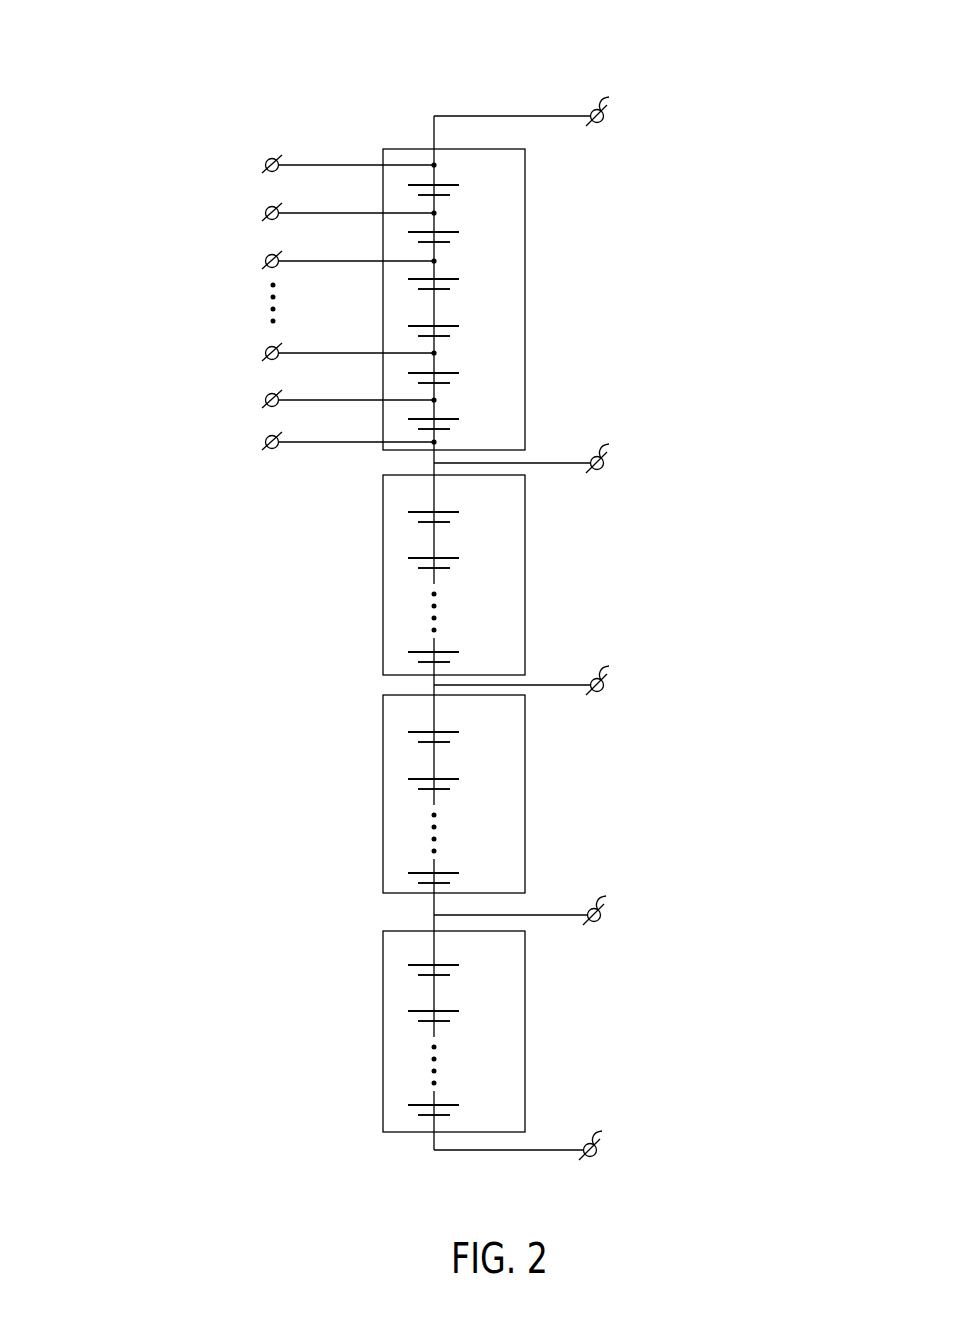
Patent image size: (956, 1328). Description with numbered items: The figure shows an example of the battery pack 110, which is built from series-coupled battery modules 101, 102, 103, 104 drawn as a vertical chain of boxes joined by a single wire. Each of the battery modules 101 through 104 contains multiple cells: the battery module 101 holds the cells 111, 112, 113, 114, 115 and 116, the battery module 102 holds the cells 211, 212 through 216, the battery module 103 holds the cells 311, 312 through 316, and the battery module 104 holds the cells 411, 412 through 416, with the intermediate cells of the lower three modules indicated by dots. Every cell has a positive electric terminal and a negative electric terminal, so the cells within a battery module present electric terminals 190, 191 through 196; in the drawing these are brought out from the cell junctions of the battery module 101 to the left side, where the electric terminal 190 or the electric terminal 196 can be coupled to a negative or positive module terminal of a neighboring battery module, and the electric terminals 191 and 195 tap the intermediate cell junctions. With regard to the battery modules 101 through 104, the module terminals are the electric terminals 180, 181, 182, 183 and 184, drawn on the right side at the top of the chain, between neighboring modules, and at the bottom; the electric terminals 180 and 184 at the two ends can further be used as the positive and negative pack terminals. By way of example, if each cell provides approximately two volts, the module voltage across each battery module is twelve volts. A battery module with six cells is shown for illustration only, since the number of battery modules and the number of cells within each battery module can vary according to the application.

The battery pack 110 is at (146, 77).
The battery module 101 is at (525, 293).
The battery module 102 is at (525, 587).
The battery module 103 is at (525, 817).
The battery module 104 is at (525, 1027).
The cell 111 is at (460, 177).
The cell 112 is at (460, 224).
The cell 113 is at (460, 271).
The cell 114 is at (460, 318).
The cell 115 is at (460, 365).
The cell 116 is at (460, 411).
The cell 211 is at (459, 504).
The cell 212 is at (459, 551).
The cell 216 is at (459, 644).
The cell 311 is at (459, 724).
The cell 312 is at (459, 771).
The cell 316 is at (459, 865).
The cell 411 is at (459, 957).
The cell 412 is at (459, 1003).
The cell 416 is at (459, 1097).
The electric terminal 180 is at (546, 106).
The electric terminal 181 is at (546, 452).
The electric terminal 182 is at (545, 681).
The electric terminal 183 is at (543, 912).
The electric terminal 184 is at (541, 1146).
The electric terminal 190 is at (349, 152).
The electric terminal 191 is at (349, 201).
The electric terminal 195 is at (349, 387).
The electric terminal 196 is at (275, 447).